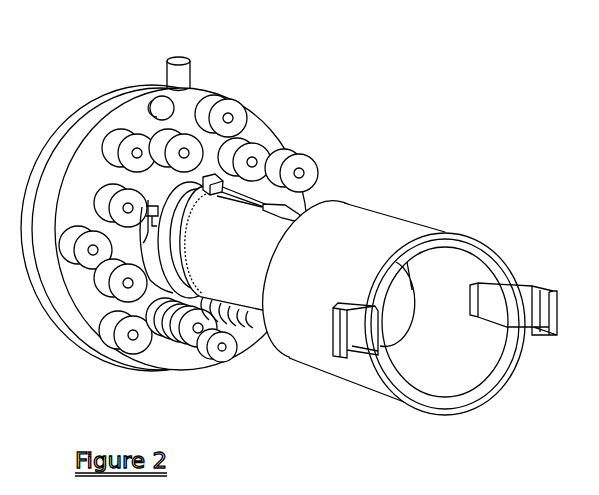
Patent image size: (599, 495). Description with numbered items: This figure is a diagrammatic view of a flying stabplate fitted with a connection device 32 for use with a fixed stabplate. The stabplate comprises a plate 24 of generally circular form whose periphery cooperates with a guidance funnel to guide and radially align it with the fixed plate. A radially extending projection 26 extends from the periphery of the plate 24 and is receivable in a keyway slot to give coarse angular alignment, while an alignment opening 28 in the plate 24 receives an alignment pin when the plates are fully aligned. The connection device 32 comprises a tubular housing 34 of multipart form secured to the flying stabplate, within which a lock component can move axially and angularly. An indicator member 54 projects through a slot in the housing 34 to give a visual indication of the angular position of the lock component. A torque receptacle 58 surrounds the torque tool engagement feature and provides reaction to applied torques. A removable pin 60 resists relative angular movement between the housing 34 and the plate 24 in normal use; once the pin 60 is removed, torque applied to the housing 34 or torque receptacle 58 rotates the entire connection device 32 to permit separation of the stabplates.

The plate 24 is at (272, 126).
The radially extending projection 26 is at (185, 73).
The alignment opening 28 is at (154, 113).
The connection device 32 is at (400, 324).
The tubular housing 34 is at (255, 300).
The indicator member 54 is at (297, 153).
The torque receptacle 58 is at (477, 395).
The removable pin 60 is at (147, 250).